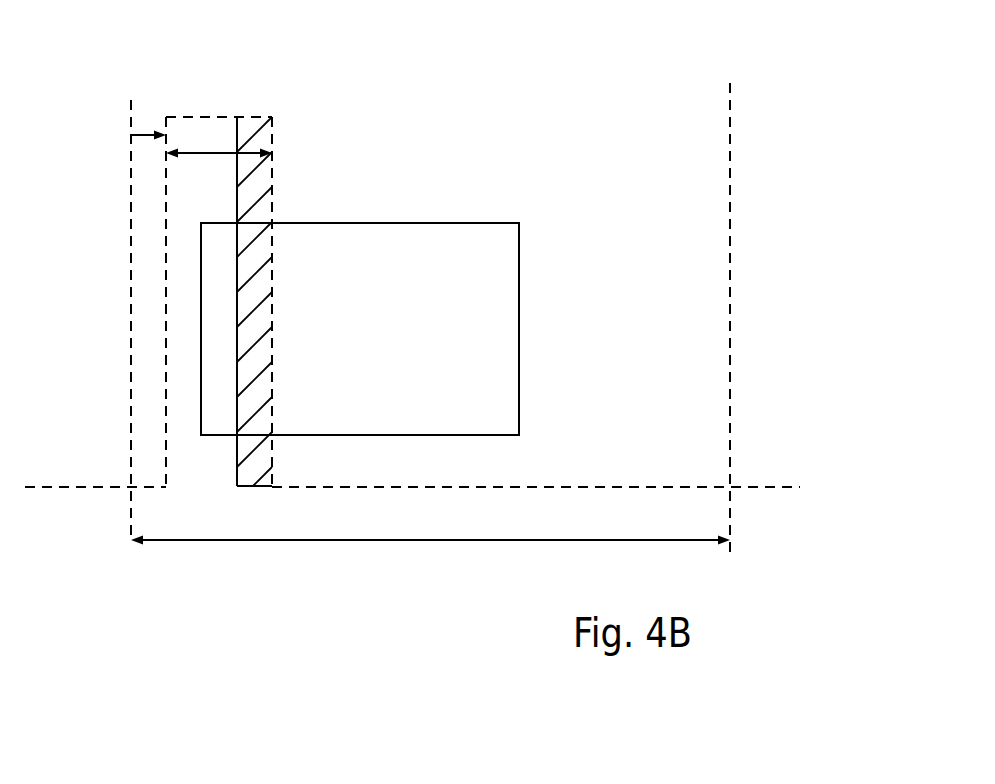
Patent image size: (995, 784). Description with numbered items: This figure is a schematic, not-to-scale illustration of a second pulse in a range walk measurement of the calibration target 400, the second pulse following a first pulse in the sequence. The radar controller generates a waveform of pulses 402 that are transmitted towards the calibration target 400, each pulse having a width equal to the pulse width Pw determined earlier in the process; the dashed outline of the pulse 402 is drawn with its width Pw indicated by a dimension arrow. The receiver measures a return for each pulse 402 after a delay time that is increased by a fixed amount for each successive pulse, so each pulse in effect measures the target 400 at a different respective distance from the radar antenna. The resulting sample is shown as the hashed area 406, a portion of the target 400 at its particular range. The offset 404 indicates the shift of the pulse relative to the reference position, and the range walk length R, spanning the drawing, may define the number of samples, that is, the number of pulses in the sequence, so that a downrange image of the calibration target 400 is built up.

The calibration target 400 is at (519, 328).
The pulses 402 is at (167, 280).
The offset distance from reference line 404 is at (143, 134).
The samples 406 is at (270, 192).
The pulse width Pw is at (216, 152).
The range walk length R is at (255, 540).